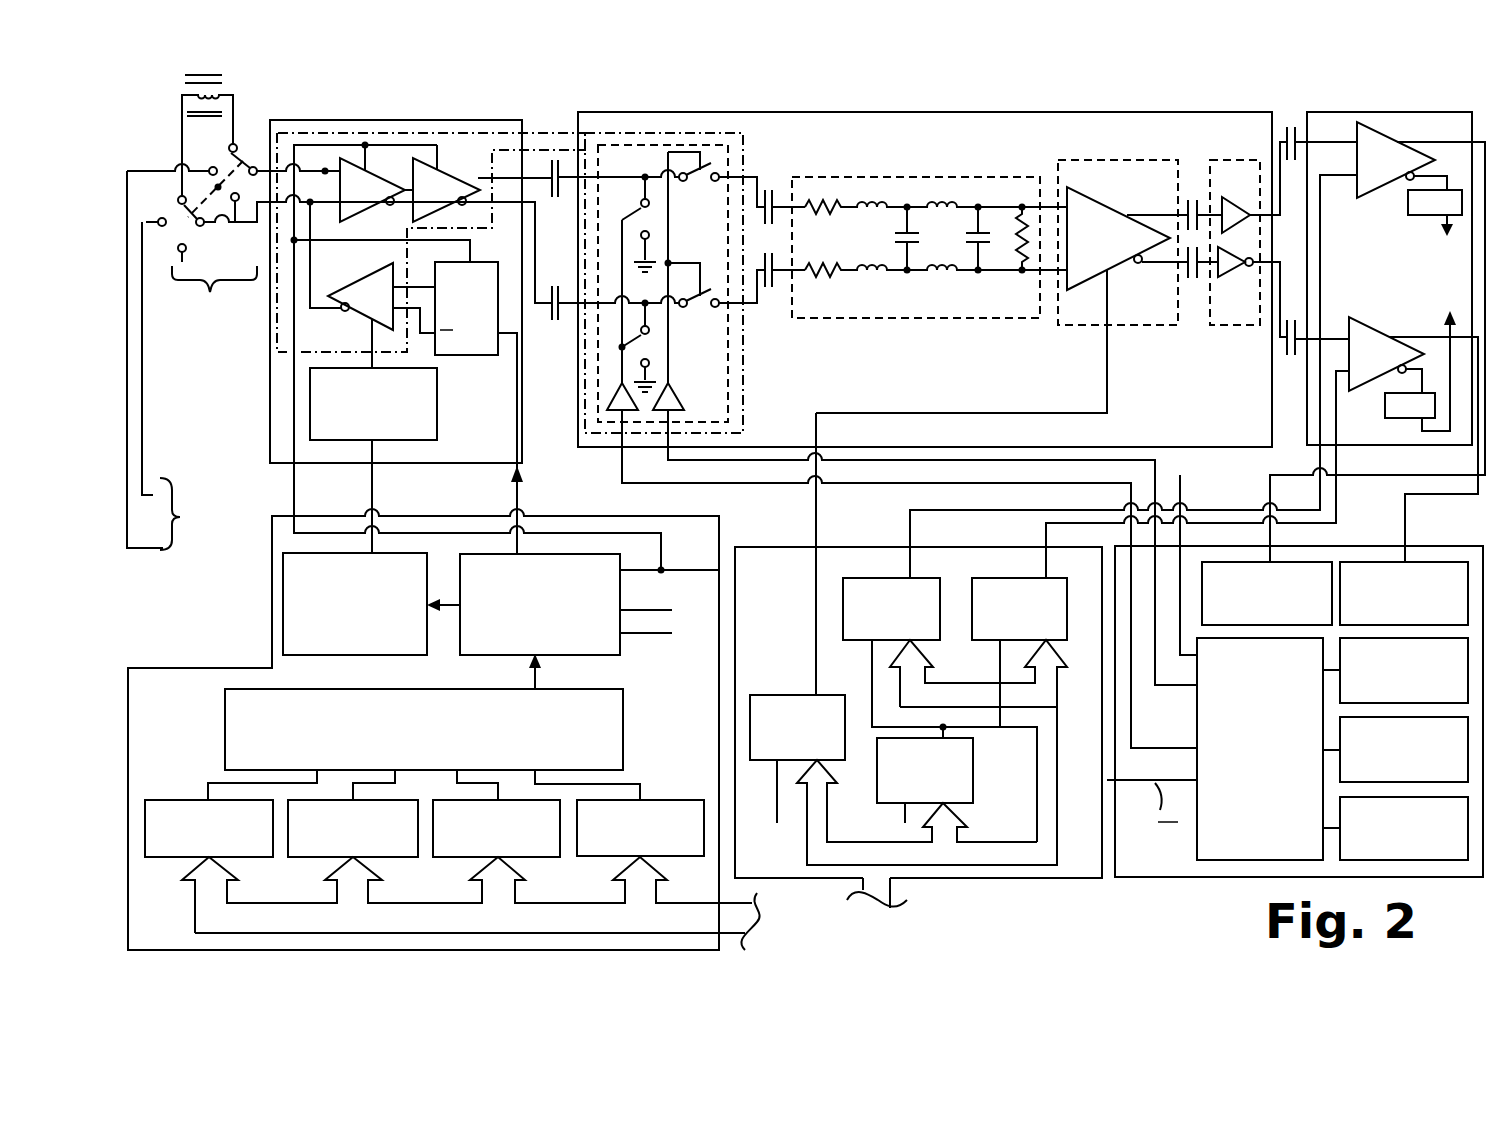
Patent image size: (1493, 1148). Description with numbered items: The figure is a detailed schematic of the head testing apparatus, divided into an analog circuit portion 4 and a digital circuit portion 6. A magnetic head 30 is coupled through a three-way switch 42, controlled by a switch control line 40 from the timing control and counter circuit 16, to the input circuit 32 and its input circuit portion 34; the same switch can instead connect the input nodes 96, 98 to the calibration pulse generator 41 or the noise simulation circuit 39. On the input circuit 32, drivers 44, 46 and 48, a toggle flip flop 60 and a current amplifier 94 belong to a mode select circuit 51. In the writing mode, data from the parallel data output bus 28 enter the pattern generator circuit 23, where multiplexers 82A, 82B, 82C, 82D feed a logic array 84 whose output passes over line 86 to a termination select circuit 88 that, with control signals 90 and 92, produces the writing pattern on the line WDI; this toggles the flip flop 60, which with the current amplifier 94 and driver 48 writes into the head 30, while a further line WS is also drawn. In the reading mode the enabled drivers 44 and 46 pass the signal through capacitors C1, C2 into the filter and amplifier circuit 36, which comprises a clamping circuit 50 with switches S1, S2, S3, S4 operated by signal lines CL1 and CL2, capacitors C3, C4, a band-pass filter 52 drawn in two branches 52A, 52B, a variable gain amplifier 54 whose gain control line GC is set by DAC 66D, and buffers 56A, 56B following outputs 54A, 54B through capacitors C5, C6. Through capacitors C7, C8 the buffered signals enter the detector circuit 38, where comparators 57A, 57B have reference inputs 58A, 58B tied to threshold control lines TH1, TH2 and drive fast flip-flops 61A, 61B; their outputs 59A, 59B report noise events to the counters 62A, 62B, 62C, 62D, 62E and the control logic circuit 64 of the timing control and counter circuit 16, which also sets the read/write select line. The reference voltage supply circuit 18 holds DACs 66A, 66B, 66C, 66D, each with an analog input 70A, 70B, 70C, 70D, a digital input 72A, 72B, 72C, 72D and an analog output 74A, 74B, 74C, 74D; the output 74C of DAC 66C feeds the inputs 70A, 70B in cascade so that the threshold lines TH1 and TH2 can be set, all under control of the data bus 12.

The magnetic head 30 is at (258, 92).
The input node 96 is at (255, 167).
The input node 98 is at (339, 354).
The three-way switch 42 is at (167, 245).
The switch control line 40 is at (230, 240).
The noise simulation circuit 39 is at (210, 359).
The calibration pulse generator 41 is at (191, 569).
The input circuit 32 is at (492, 110).
The input circuit portion 34 is at (535, 452).
The driver 44 is at (360, 202).
The driver 46 is at (434, 202).
The driver 48 is at (353, 308).
The toggle flip flop 60 is at (480, 356).
The current amplifier 94 is at (437, 398).
The write data interface signal line WDI is at (500, 507).
The write select line WS is at (367, 503).
The pattern generator circuit 23 is at (730, 530).
The control signal 92 is at (655, 610).
The control signal 90 is at (668, 633).
The termination select circuit 88 is at (622, 650).
The logic array output to termination select 86 is at (539, 680).
The logic array 84 is at (602, 762).
The multiplexer 82D is at (187, 800).
The multiplexer 82C is at (387, 858).
The multiplexer 82B is at (535, 858).
The multiplexer 82A is at (667, 800).
The parallel data output bus 28 is at (485, 932).
The filter and amplifier circuit 36 is at (594, 456).
The mode select circuit 51 is at (650, 126).
The clamping circuit 50 is at (742, 384).
The capacitor C1 is at (560, 198).
The capacitor C2 is at (560, 322).
The switch S3 is at (618, 276).
The switch S1 is at (716, 267).
The switch S2 is at (661, 303).
The switch S4 is at (653, 355).
The signal line CL2 is at (720, 485).
The signal line CL1 is at (713, 462).
The coupling capacitor C3 is at (768, 190).
The coupling capacitor C4 is at (768, 290).
The band-pass filter 52 is at (933, 330).
The filter section 52A is at (1030, 362).
The filter section 52B is at (1003, 372).
The amplifier 54 is at (1106, 250).
The amplifier output 54A is at (1157, 213).
The amplifier output 54B is at (1167, 267).
The coupling capacitor C5 is at (1190, 200).
The coupling capacitor C6 is at (1192, 282).
The buffer 56A is at (1228, 197).
The buffer 56B is at (1235, 278).
The gain control line GC is at (1105, 395).
The analog circuit portion 4 is at (1052, 93).
The detector circuit 38 is at (1477, 108).
The coupling capacitor C7 is at (1291, 127).
The coupling capacitor C8 is at (1291, 357).
The comparator 57A is at (1380, 128).
The fast flip-flop 61A is at (1408, 200).
The control logic circuit 64 is at (1248, 834).
The comparator 57B is at (1387, 318).
The fast flip-flop 61B is at (1385, 405).
The comparator output line 59B is at (1450, 475).
The comparator output line 59A is at (1478, 494).
The reference input 58A is at (1319, 459).
The reference input 58B is at (1374, 505).
The threshold control line TH1 is at (920, 508).
The threshold control line TH2 is at (1053, 517).
The timing control and counter circuit 16 is at (1182, 884).
The counter 62E is at (1249, 617).
The counter 62A is at (1386, 617).
The counter 62B is at (1386, 699).
The counter 62C is at (1386, 777).
The counter 62D is at (1386, 857).
The reference voltage supply circuit 18 is at (1026, 887).
The digital circuit portion 6 is at (990, 926).
The digital-to-analog circuit 66B is at (873, 632).
The digital-to-analog circuit 66A is at (1001, 632).
The digital-to-analog circuit 66D is at (779, 754).
The digital-to-analog circuit 66C is at (907, 796).
The DAC output line 74B is at (912, 568).
The DAC output line 74A is at (1047, 552).
The analog output 74D is at (814, 644).
The analog output 74C is at (970, 730).
The analog input 70B is at (868, 660).
The analog input 70A is at (975, 727).
The analog input 70D is at (770, 797).
The analog input 70C is at (905, 810).
The digital input 72B is at (925, 655).
The digital input 72A is at (1030, 653).
The digital input 72D is at (850, 780).
The digital input 72C is at (967, 815).
The data bus 12 is at (900, 895).